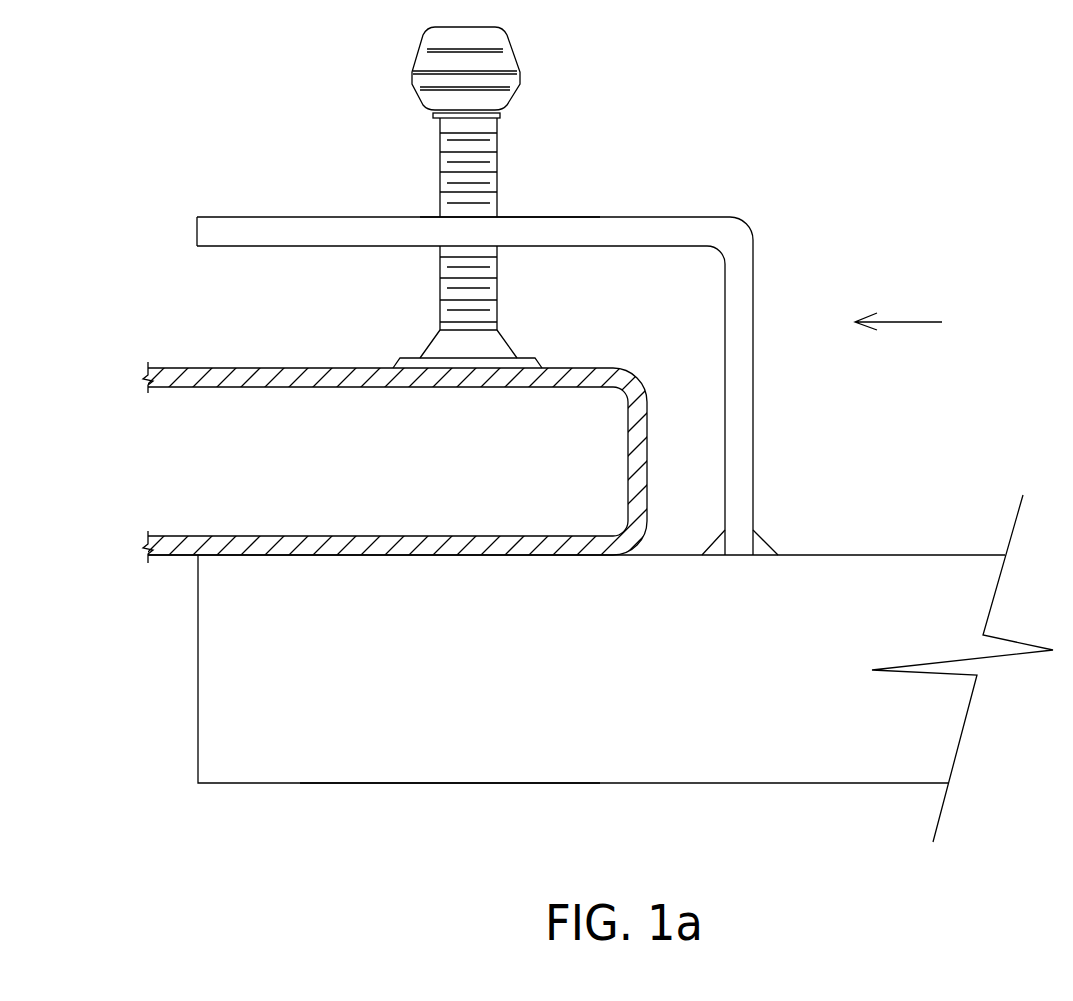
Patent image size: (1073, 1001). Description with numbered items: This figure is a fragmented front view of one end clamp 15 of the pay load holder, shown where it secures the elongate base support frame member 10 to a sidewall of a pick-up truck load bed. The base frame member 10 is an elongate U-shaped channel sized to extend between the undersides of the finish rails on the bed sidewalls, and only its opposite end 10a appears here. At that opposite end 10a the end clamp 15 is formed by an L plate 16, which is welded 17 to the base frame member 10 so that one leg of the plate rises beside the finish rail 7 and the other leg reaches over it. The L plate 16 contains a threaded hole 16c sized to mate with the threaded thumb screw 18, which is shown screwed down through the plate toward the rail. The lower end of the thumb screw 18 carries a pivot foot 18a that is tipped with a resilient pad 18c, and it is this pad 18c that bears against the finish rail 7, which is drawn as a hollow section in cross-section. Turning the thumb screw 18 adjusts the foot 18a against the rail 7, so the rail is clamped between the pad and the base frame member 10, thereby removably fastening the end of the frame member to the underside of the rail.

The finish rail 7 is at (627, 497).
The base support frame member 10 is at (743, 690).
The opposite end of base frame member 10a is at (473, 740).
The end clamp 15 is at (918, 322).
The L plate 16 is at (302, 217).
The threaded hole 16c is at (497, 217).
The weld 17 is at (767, 538).
The thumb screw 18 is at (497, 142).
The pivot foot 18a is at (508, 338).
The resilient pad 18c is at (537, 362).